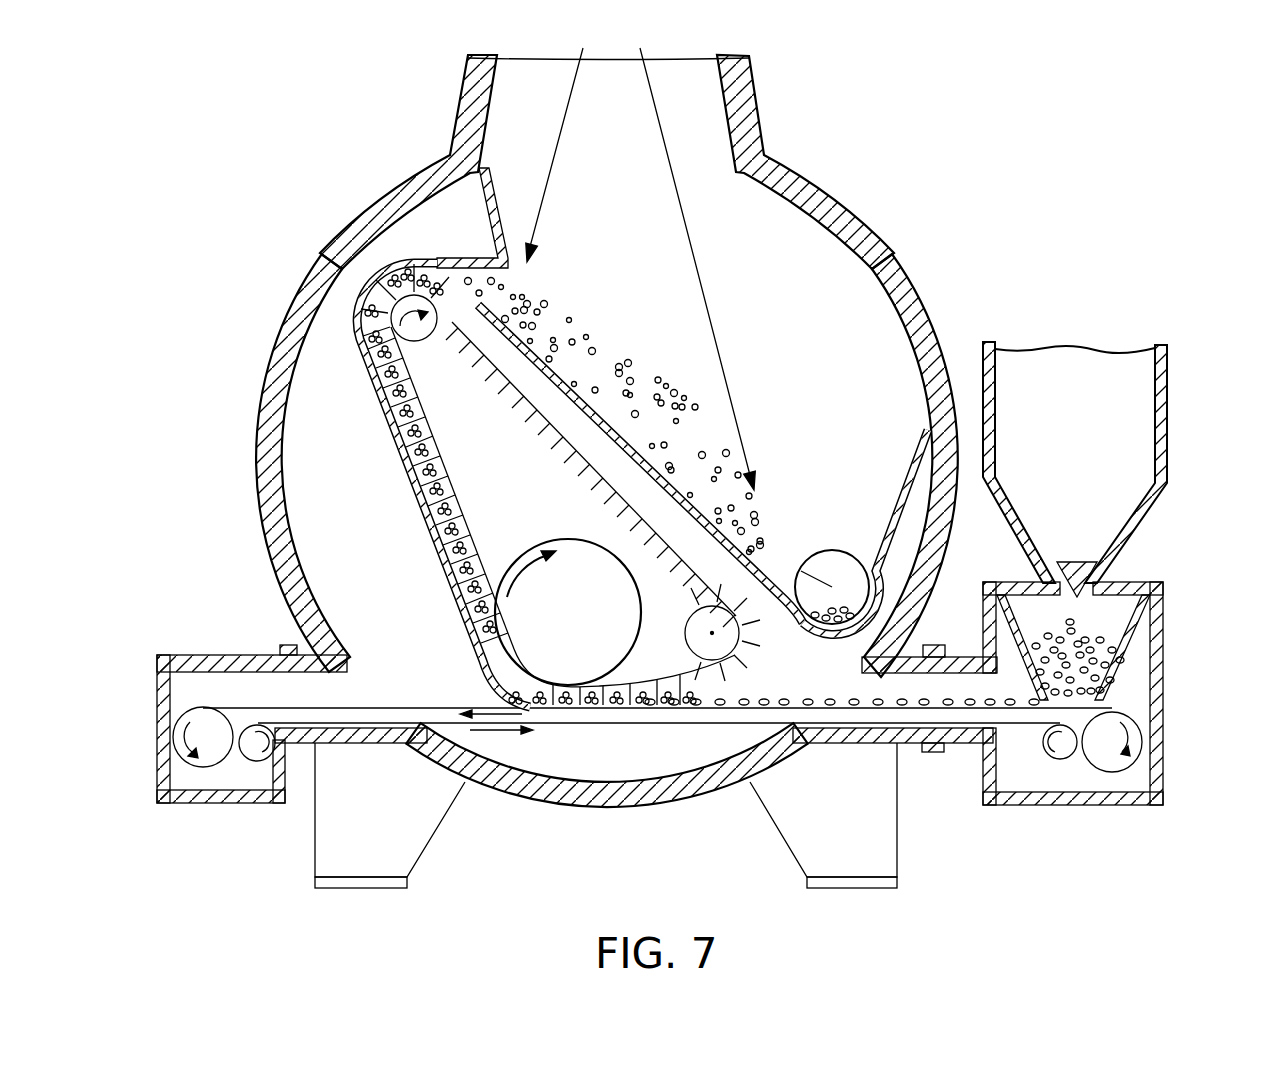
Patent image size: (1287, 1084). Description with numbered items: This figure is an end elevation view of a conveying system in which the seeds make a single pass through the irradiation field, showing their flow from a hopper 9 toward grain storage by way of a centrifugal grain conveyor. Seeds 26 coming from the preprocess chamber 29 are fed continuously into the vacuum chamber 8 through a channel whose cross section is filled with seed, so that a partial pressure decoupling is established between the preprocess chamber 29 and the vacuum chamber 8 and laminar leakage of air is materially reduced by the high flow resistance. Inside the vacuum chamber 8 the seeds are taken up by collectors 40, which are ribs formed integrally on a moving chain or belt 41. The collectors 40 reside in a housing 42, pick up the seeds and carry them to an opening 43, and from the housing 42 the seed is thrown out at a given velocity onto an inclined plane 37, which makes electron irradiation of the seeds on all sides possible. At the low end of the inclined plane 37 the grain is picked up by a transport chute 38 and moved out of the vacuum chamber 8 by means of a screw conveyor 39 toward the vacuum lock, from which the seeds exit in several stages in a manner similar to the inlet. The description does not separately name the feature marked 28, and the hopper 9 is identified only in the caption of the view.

The vacuum chamber 8 is at (300, 290).
The hopper 9 is at (1180, 388).
The seeds 26 is at (1100, 680).
The feed stream 28 is at (665, 150).
The preprocess chamber 29 is at (1145, 633).
The inclined plane 37 is at (630, 447).
The transport chute 38 is at (835, 630).
The screw conveyor 39 is at (847, 585).
The collectors 40 is at (731, 673).
The moving chain or belt 41 is at (670, 677).
The housing 42 is at (383, 402).
The opening 43 is at (465, 278).